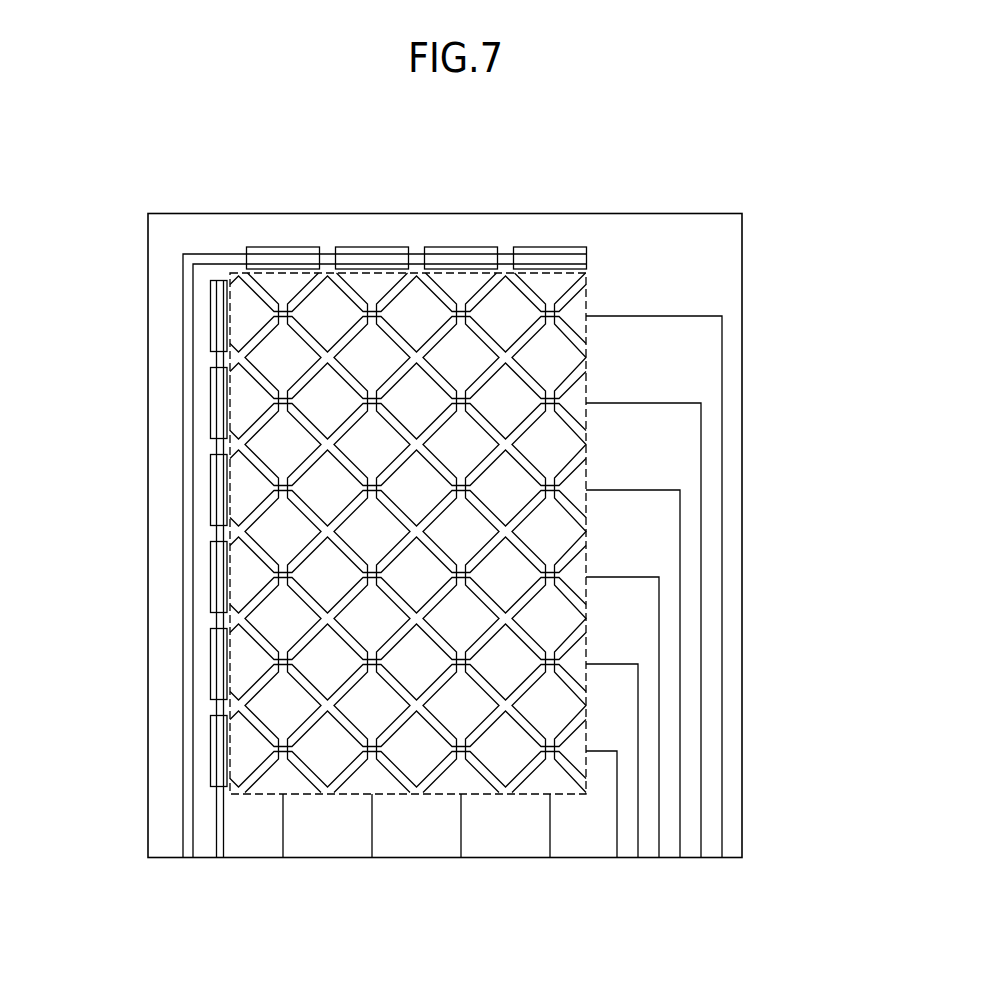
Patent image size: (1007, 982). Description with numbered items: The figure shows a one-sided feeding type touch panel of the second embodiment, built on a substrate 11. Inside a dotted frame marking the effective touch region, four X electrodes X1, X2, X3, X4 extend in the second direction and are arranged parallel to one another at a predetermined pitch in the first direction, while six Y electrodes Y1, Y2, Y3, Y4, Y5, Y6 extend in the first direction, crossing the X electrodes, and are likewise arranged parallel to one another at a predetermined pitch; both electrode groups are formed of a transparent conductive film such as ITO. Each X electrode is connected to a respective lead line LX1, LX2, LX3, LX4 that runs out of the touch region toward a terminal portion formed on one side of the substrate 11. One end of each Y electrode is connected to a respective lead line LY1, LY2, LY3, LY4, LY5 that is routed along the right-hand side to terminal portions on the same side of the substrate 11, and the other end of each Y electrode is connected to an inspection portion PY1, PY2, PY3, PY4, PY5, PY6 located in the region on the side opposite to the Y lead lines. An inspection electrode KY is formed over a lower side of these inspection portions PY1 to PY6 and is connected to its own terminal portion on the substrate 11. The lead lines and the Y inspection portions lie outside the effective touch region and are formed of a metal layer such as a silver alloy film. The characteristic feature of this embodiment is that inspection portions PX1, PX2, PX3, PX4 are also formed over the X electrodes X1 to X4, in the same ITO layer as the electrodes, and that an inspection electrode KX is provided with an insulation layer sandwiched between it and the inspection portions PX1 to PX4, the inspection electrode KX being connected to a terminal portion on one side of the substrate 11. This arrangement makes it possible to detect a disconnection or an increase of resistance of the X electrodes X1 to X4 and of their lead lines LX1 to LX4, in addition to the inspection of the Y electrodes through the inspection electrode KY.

The substrate 11 is at (170, 837).
The inspection electrode KY is at (232, 295).
The inspection electrode KX is at (185, 605).
The inspection portion PX1 is at (263, 250).
The inspection portion PX2 is at (353, 250).
The inspection portion PX3 is at (440, 250).
The inspection portion PX4 is at (527, 250).
The X electrode X1 is at (292, 280).
The X electrode X2 is at (377, 280).
The X electrode X3 is at (462, 280).
The X electrode X4 is at (552, 280).
The Y electrode Y1 is at (582, 743).
The Y electrode Y2 is at (582, 658).
The Y electrode Y3 is at (582, 572).
The Y electrode Y4 is at (585, 485).
The Y electrode Y5 is at (585, 398).
The Y electrode Y6 is at (585, 311).
The inspection portion PY1 is at (212, 745).
The inspection portion PY2 is at (212, 660).
The inspection portion PY3 is at (212, 576).
The inspection portion PY4 is at (212, 490).
The inspection portion PY5 is at (212, 403).
The inspection portion PY6 is at (213, 318).
The lead line LY1 is at (616, 775).
The lead line LY2 is at (637, 685).
The lead line LY3 is at (659, 610).
The lead line LY4 is at (680, 512).
The lead line LY5 is at (701, 452).
The lead line LX1 is at (283, 815).
The lead line LX2 is at (372, 815).
The lead line LX3 is at (461, 815).
The lead line LX4 is at (550, 815).